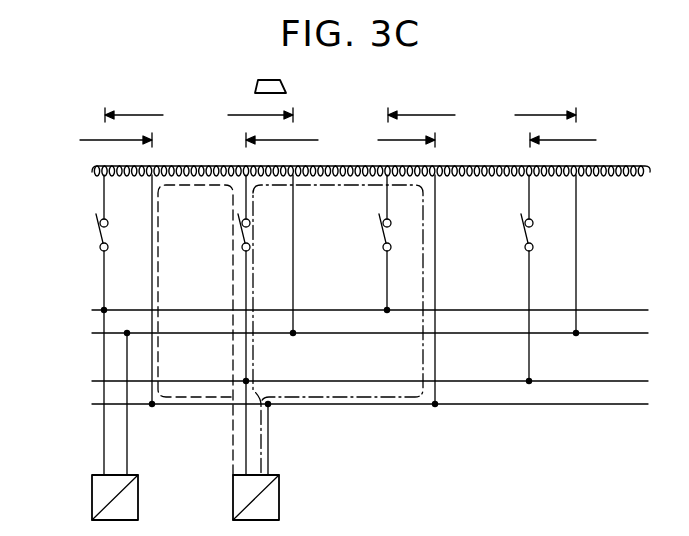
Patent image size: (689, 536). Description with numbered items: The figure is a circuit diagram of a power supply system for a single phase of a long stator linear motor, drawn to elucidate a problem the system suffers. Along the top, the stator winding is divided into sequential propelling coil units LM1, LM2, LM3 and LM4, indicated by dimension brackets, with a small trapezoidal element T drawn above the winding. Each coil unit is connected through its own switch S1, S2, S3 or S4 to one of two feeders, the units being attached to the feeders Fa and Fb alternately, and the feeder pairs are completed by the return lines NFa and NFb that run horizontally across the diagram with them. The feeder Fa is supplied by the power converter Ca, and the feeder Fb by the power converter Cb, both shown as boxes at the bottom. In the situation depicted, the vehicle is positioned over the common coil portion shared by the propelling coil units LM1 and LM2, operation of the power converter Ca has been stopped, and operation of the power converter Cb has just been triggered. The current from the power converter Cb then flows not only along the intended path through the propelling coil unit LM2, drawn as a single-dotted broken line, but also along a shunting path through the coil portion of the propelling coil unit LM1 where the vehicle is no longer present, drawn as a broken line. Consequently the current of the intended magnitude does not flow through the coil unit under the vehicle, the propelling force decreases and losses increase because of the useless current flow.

The thermostat T is at (257, 88).
The propelling coil unit LM1 is at (199, 117).
The propelling coil unit LM2 is at (340, 142).
The propelling coil unit LM3 is at (482, 117).
The propelling coil unit LM4 is at (590, 142).
The switch S1 is at (97, 234).
The switch S2 is at (239, 234).
The switch S3 is at (380, 234).
The switch S4 is at (521, 234).
The feeder Fa is at (92, 310).
The first neutral line a NFa is at (92, 333).
The feeder Fb is at (92, 381).
The second neutral line b NFb is at (92, 404).
The power converter Ca is at (138, 493).
The power converter Cb is at (279, 493).